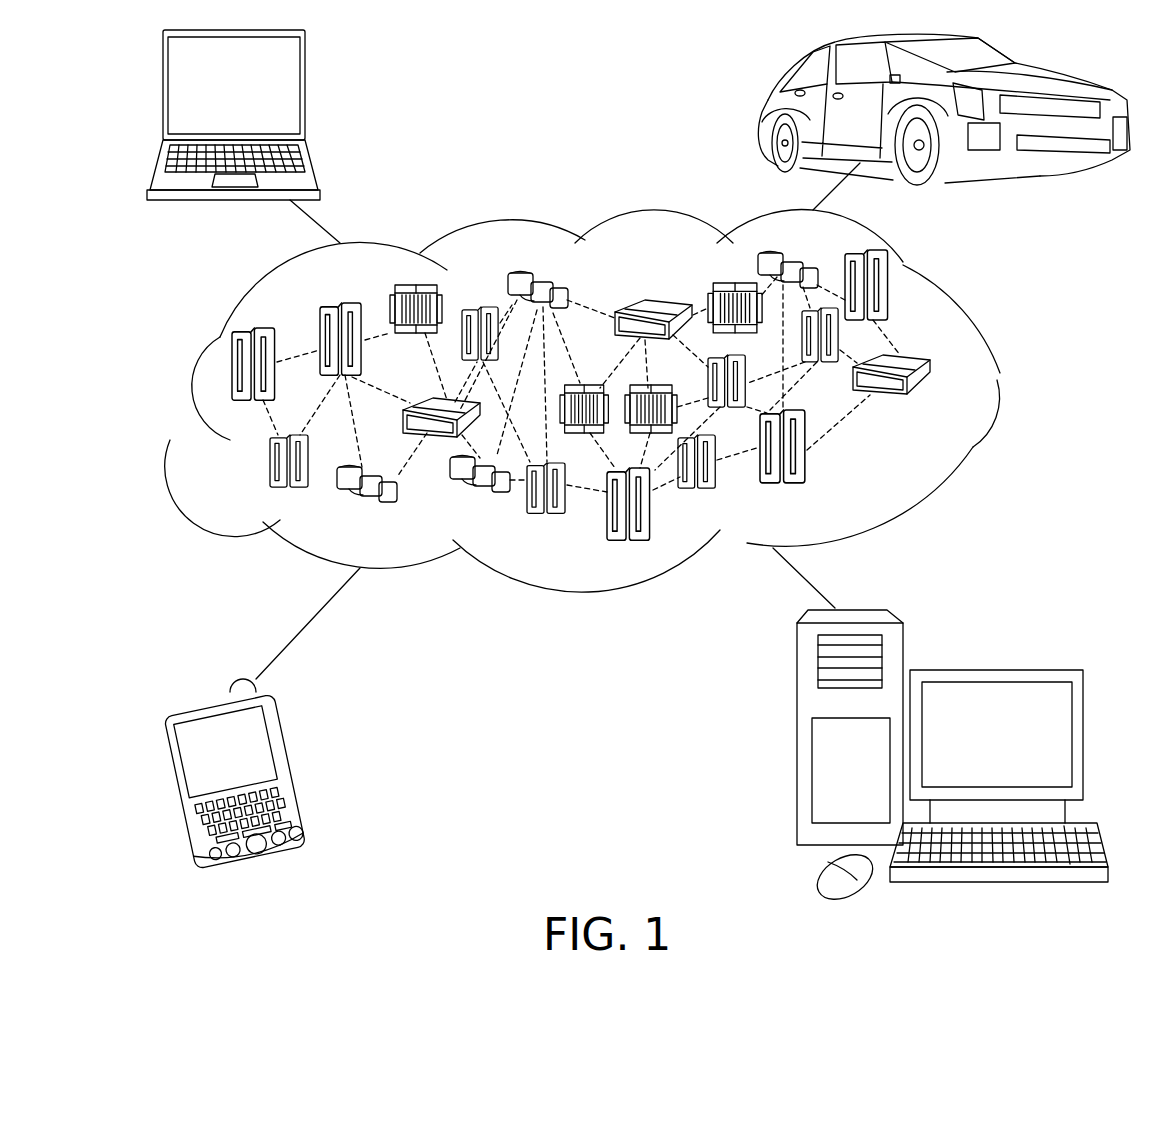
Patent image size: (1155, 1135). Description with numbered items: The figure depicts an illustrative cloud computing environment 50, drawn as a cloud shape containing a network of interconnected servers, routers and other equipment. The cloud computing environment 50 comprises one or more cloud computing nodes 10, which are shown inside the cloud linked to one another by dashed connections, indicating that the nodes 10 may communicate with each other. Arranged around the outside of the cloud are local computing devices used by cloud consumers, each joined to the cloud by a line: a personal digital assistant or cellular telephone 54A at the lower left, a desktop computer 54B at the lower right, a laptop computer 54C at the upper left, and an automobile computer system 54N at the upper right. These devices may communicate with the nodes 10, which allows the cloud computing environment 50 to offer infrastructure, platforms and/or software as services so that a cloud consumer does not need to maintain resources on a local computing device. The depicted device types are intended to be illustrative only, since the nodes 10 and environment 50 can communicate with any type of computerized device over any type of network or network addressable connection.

The cloud computing nodes 10 is at (612, 444).
The cloud computing environment 50 is at (993, 373).
The personal digital assistant or cellular telephone 54A is at (293, 765).
The desktop computer 54B is at (993, 668).
The laptop computer 54C is at (307, 92).
The automobile computer system 54N is at (765, 110).